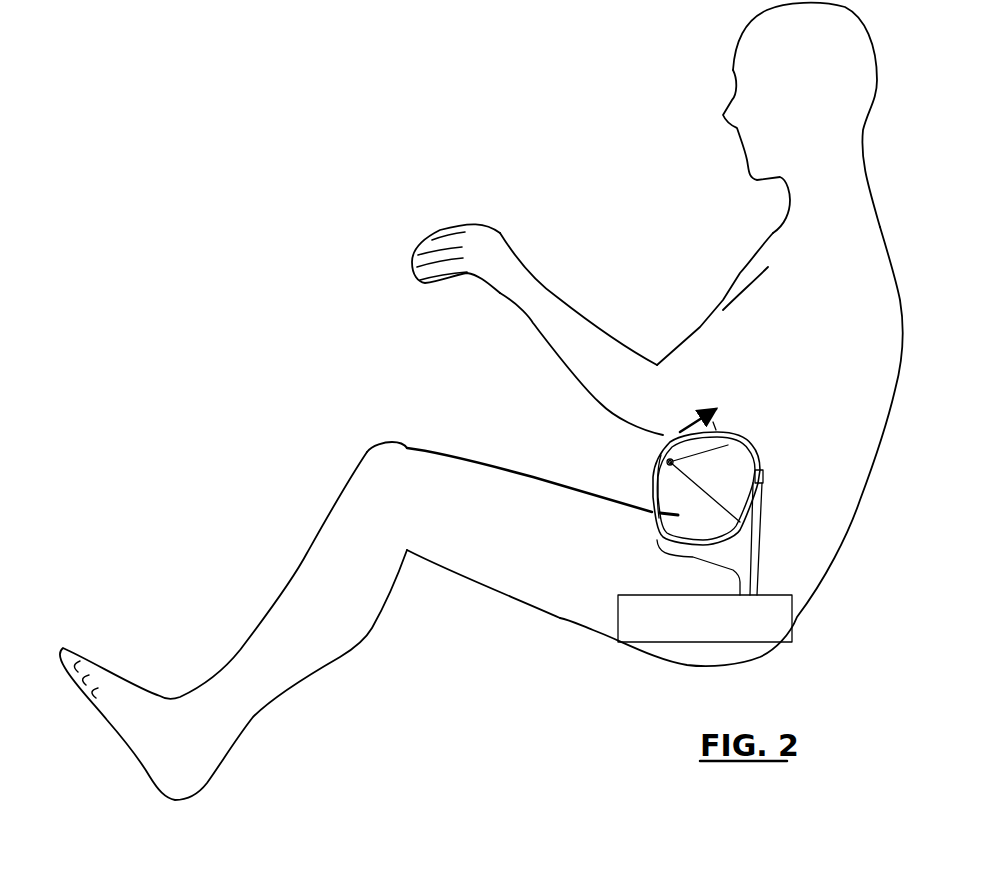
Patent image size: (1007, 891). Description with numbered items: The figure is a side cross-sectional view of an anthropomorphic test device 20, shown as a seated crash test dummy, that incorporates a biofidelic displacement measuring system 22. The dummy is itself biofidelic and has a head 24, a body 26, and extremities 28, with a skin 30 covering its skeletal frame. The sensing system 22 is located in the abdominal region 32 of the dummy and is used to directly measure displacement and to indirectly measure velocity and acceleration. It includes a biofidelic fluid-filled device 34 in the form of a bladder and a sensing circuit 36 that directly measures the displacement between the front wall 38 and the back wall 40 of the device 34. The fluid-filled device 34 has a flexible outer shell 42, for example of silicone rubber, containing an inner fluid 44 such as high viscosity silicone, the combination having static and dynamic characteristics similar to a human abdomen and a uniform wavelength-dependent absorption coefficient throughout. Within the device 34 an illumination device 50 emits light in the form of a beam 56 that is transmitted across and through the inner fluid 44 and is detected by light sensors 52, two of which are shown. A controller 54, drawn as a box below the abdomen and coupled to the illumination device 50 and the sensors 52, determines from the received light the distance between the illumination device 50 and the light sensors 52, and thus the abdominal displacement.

The anthropomorphic test device 20 is at (733, 276).
The biofidelic displacement measuring system 22 is at (721, 479).
The head 24 is at (733, 78).
The body 26 is at (817, 359).
The extremities 28 is at (533, 477).
The skin 30 is at (652, 477).
The abdominal region 32 is at (640, 519).
The fluid-filled device 34 is at (726, 432).
The sensing circuit 36 is at (663, 561).
The front wall 38 is at (669, 458).
The back wall 40 is at (757, 497).
The shell 42 is at (760, 450).
The inner fluid 44 is at (712, 425).
The illumination device 50 is at (666, 460).
The light sensors 52 is at (762, 467).
The controller 54 is at (772, 595).
The beam 56 is at (693, 487).